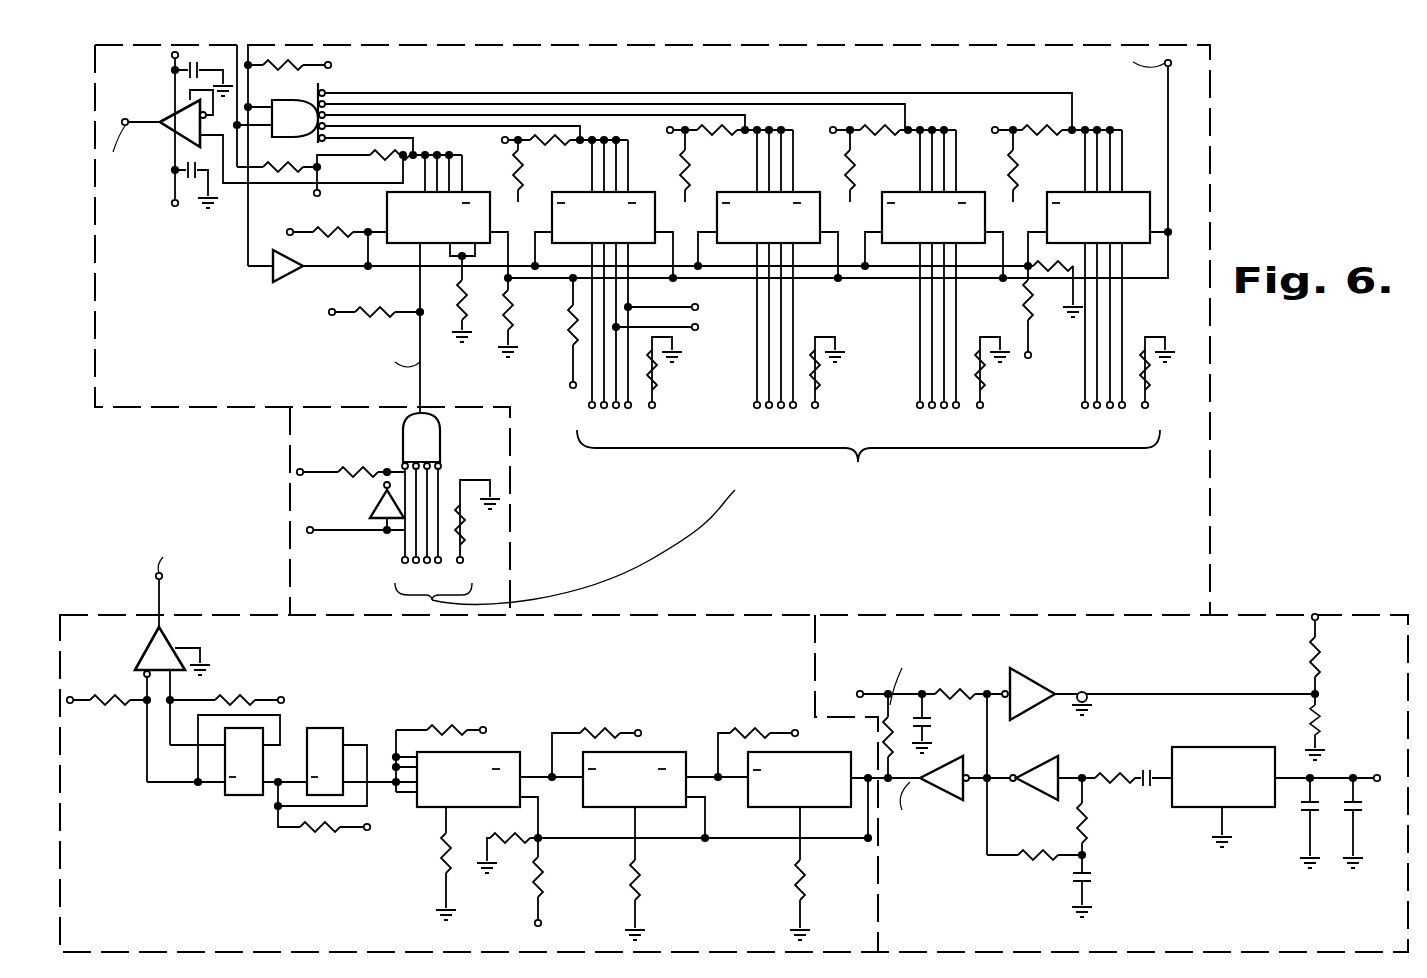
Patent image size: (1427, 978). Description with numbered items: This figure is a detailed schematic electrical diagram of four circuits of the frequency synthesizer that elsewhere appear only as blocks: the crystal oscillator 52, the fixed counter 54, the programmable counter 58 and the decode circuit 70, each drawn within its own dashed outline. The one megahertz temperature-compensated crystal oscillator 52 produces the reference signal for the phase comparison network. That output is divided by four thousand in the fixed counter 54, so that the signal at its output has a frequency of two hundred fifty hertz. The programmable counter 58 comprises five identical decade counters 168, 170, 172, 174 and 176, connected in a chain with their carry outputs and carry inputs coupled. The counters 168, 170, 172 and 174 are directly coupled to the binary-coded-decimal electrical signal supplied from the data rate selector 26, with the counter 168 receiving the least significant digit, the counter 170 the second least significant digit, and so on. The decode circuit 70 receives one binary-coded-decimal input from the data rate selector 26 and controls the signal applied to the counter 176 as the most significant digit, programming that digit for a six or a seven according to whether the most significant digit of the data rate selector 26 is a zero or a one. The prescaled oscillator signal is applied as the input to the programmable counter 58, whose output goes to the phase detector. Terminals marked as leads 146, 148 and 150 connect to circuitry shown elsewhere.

The decade counter 176 is at (450, 208).
The decade counter 174 is at (613, 208).
The decade counter 172 is at (777, 208).
The decade counter 170 is at (952, 208).
The decade counter 168 is at (1122, 208).
The programmable counter 58 is at (626, 532).
The decode circuit 70 is at (348, 590).
The fixed counter 54 is at (376, 655).
The crystal oscillator 52 is at (1134, 660).
The lead 148 is at (670, 300).
The lead 150 is at (664, 321).
The lead 146 is at (333, 543).
The data rate selector 26 is at (868, 460).